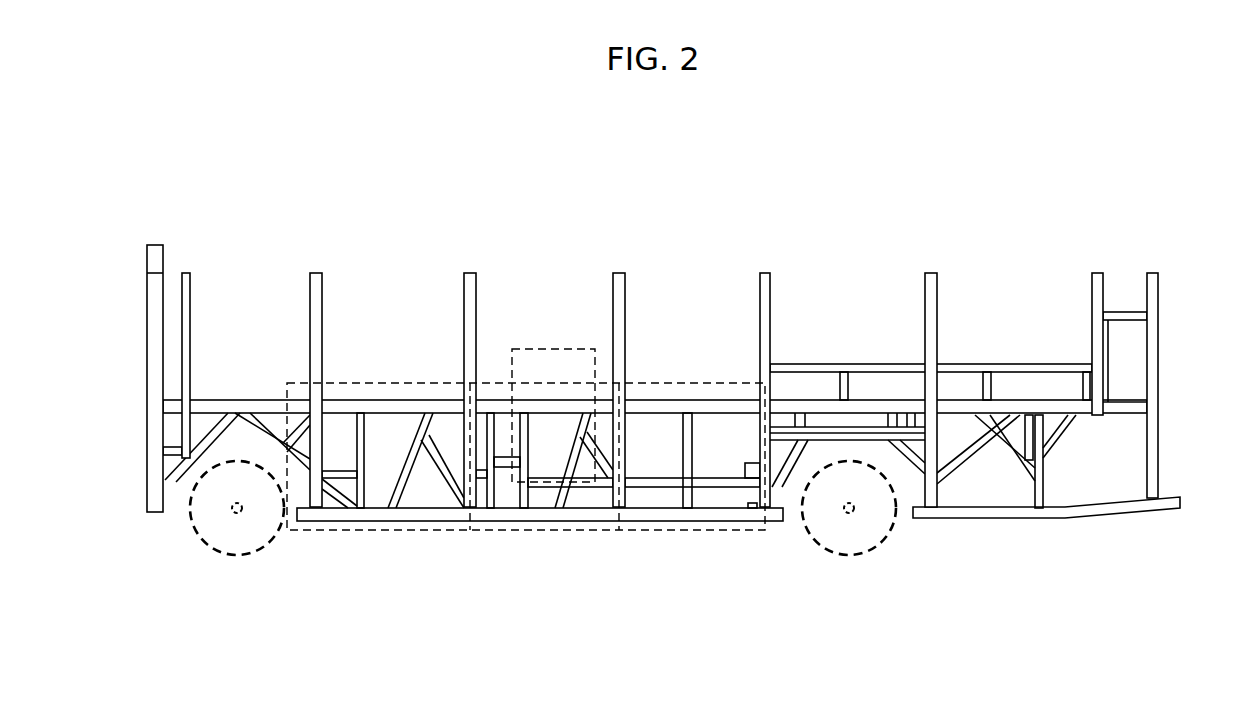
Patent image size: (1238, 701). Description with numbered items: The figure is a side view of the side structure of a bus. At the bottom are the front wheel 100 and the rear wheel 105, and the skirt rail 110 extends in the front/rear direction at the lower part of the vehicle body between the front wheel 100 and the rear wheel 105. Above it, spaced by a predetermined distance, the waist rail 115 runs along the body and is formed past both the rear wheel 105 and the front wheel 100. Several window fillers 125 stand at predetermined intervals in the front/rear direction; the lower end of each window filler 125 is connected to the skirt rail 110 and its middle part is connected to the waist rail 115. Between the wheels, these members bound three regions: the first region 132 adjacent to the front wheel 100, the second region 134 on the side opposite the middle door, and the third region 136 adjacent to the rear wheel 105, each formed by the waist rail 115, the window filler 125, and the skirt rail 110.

The front wheel 100 is at (203, 544).
The rear wheel 105 is at (808, 532).
The skirt rail 110 is at (778, 522).
The waist rail 115 is at (382, 399).
The window filler 125 is at (315, 273).
The first region 132 is at (426, 465).
The second region 134 is at (566, 449).
The third region 136 is at (682, 443).